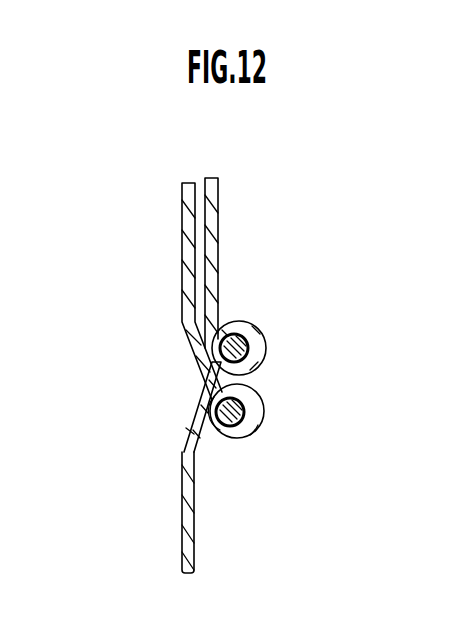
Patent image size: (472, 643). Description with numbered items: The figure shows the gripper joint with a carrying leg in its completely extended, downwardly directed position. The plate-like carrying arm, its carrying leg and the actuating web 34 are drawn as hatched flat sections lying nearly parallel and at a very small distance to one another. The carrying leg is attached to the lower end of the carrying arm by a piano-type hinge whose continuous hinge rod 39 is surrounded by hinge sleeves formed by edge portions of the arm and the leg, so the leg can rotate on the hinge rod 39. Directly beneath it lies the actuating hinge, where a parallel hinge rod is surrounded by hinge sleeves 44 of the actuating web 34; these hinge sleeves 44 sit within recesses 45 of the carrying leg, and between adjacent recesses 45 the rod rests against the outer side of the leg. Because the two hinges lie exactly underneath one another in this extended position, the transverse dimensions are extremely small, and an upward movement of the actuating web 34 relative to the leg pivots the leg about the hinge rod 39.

The hinge rod 39 is at (243, 336).
The actuating web 34 is at (234, 432).
The hinge sleeves 44 is at (250, 425).
The recesses 45 is at (185, 430).